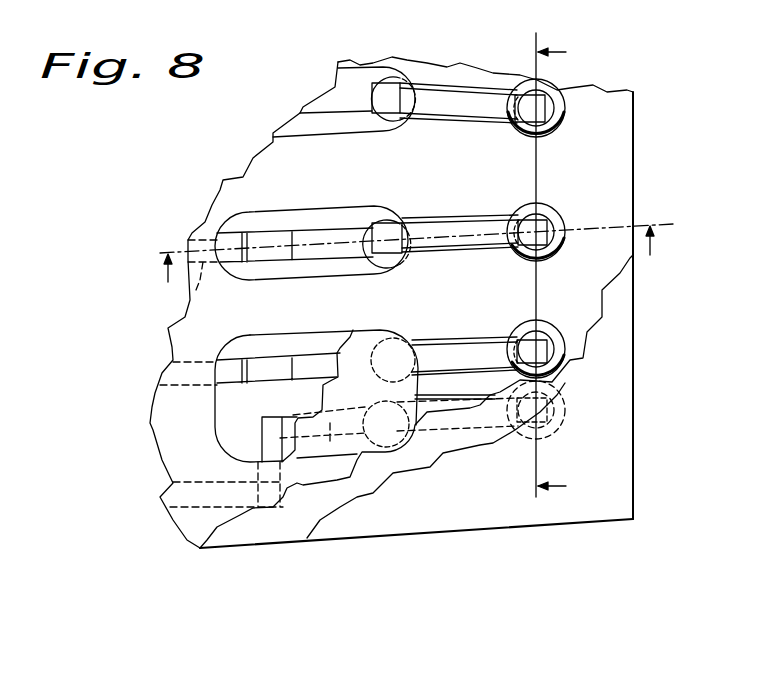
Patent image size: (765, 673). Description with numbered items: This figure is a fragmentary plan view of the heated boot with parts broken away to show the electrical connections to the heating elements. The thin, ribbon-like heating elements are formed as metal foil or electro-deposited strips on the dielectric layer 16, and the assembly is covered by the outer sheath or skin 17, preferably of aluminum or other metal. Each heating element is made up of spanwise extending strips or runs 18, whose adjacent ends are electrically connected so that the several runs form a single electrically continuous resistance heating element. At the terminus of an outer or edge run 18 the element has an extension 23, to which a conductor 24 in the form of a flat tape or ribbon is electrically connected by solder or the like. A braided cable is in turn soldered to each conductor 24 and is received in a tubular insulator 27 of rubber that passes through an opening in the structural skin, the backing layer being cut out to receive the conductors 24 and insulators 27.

The dielectric layer 16 is at (452, 442).
The outer sheath or skin 17 is at (487, 510).
The runs 18 is at (196, 290).
The extension 23 is at (343, 107).
The conductor 24 is at (455, 105).
The tubular insulator 27 is at (565, 108).